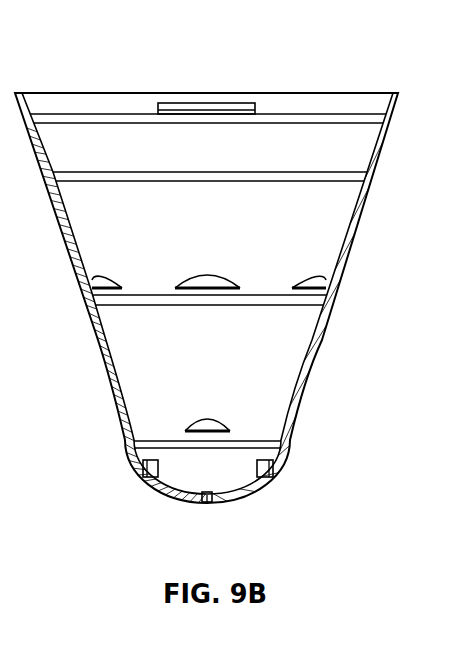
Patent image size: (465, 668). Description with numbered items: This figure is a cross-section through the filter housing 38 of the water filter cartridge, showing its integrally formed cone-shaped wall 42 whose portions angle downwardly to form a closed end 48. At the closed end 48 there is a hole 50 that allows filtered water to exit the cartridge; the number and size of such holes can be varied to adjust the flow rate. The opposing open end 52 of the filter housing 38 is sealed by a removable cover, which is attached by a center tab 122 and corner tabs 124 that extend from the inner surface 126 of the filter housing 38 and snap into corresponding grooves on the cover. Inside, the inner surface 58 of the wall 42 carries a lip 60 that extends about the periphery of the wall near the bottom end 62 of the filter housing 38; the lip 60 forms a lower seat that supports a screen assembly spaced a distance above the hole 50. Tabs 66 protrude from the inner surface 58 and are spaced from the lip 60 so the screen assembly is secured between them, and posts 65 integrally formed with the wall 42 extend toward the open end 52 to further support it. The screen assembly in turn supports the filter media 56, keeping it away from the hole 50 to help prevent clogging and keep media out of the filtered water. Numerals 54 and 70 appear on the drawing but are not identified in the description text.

The filter housing 38 is at (311, 68).
The cone-shaped wall 42 is at (350, 247).
The closed end 48 is at (120, 478).
The hole 50 is at (207, 503).
The open end 52 is at (92, 80).
The shelf 54 is at (264, 146).
The filter media 56 is at (4, 113).
The inner surface 58 is at (38, 131).
The lip 60 is at (233, 448).
The bottom end 62 is at (283, 450).
The posts 65 is at (152, 483).
The tabs 66 is at (203, 420).
The wall portion 70 is at (10, 185).
The center tab 122 is at (203, 110).
The corner tabs 124 is at (0, 250).
The inner surface 126 is at (392, 100).